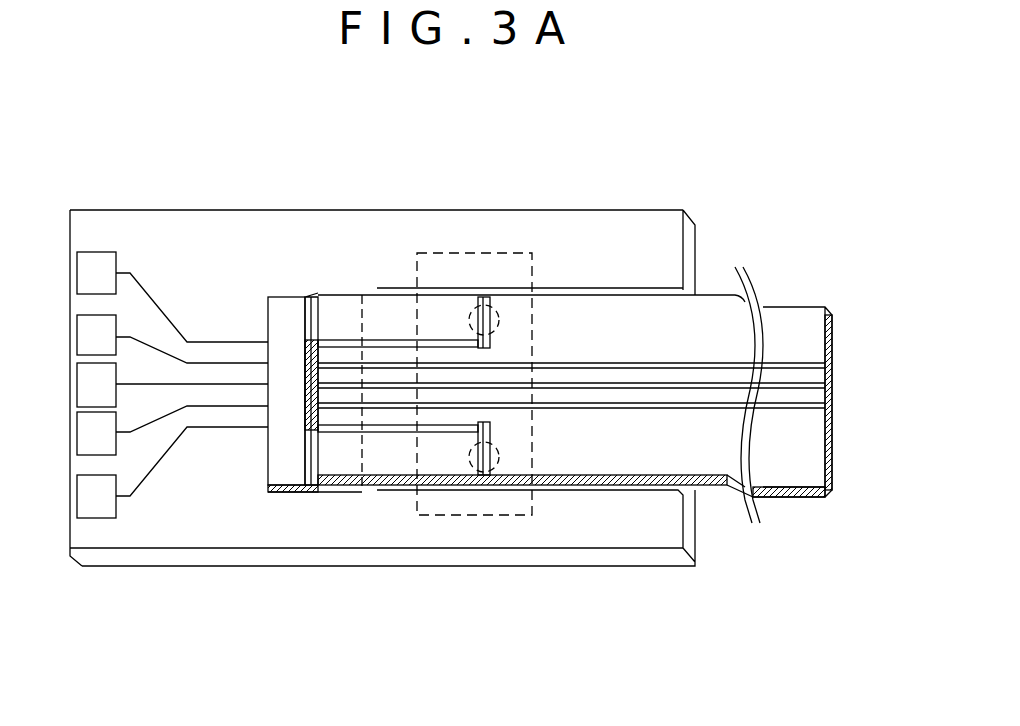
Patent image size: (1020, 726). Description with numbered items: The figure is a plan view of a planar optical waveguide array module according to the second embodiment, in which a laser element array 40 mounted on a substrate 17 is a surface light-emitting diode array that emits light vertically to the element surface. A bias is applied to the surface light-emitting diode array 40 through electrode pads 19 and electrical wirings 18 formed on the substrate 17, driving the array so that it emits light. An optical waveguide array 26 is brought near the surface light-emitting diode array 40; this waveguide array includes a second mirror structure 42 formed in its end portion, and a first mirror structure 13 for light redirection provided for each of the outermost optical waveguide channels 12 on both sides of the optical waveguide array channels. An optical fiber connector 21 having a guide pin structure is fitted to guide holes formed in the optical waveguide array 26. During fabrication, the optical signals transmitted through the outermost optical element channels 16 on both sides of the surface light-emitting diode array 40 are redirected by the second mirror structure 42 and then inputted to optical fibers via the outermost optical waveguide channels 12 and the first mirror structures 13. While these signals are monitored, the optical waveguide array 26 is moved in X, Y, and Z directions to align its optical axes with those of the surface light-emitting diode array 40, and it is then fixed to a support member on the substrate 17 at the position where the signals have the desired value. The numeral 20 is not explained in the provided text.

The outermost optical waveguide channel 12 is at (444, 338).
The first mirror structure 13 is at (498, 335).
The outermost optical element channel 16 is at (313, 297).
The substrate 17 is at (242, 277).
The electrical wiring 18 is at (152, 295).
The electrode pad 19 is at (90, 263).
The housing 20 is at (613, 250).
The optical fiber connector 21 is at (471, 252).
The optical waveguide array 26 is at (715, 293).
The surface light-emitting diode array 40 is at (285, 458).
The second mirror structure 42 is at (340, 305).